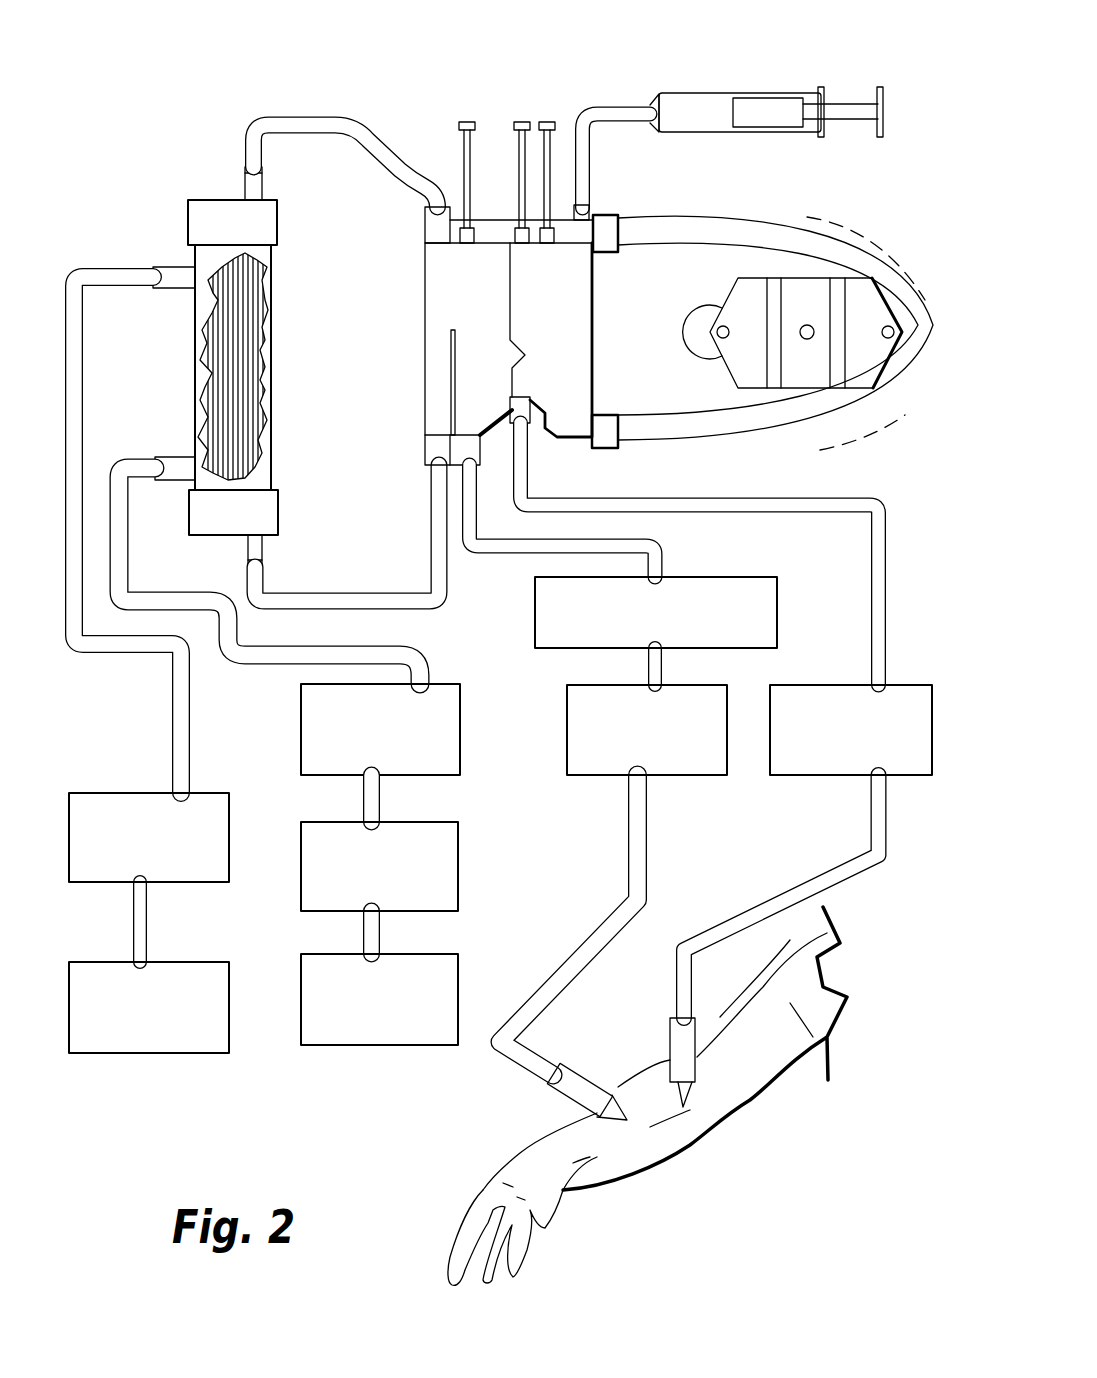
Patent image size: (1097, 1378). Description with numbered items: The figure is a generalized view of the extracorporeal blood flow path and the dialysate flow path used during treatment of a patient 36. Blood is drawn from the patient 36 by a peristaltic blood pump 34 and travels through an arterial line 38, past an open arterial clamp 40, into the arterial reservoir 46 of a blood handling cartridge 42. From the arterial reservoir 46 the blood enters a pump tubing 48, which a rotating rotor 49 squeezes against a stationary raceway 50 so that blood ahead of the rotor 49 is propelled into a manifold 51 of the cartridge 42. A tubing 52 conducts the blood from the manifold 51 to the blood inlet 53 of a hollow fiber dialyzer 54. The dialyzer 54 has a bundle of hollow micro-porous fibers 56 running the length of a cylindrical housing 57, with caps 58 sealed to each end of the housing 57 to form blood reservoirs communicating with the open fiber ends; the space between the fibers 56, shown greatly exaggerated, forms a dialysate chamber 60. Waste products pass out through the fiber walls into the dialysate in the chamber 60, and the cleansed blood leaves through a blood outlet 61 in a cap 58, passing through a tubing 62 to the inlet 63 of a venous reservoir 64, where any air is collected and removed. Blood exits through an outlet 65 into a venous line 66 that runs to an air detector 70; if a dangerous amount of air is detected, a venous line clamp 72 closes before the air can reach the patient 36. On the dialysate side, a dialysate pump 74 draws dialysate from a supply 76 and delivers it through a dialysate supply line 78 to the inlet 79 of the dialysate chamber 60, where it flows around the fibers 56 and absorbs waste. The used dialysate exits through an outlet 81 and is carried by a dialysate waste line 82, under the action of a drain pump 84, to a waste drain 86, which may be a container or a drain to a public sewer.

The blood pump 34 is at (774, 279).
The patient 36 is at (657, 1155).
The arterial line 38 is at (738, 496).
The arterial clamp 40 is at (912, 688).
The blood handling cartridge 42 is at (600, 302).
The arterial reservoir 46 is at (572, 348).
The pump tubing 48 is at (655, 432).
The rotor 49 is at (742, 367).
The raceway 50 is at (781, 316).
The manifold 51 is at (495, 220).
The tubing 52 is at (360, 117).
The blood inlet 53 is at (252, 187).
The hollow fiber dialyzer 54 is at (250, 353).
The hollow micro-porous fibers 56 is at (242, 357).
The cylindrical housing 57 is at (273, 383).
The caps 58 is at (267, 226).
The dialysate chamber 60 is at (232, 367).
The blood outlet 61 is at (263, 553).
The tubing 62 is at (377, 600).
The inlet 63 is at (433, 452).
The venous reservoir 64 is at (438, 280).
The outlet 65 is at (480, 457).
The venous line 66 is at (508, 548).
The air detector 70 is at (717, 588).
The venous line clamp 72 is at (703, 760).
The dialysate pump 74 is at (441, 890).
The dialysate supply 76 is at (441, 1038).
The dialysate supply line 78 is at (158, 602).
The inlet 79 is at (178, 470).
The outlet 81 is at (170, 272).
The dialysate waste line 82 is at (65, 600).
The drain pump 84 is at (201, 868).
The waste drain 86 is at (207, 1040).